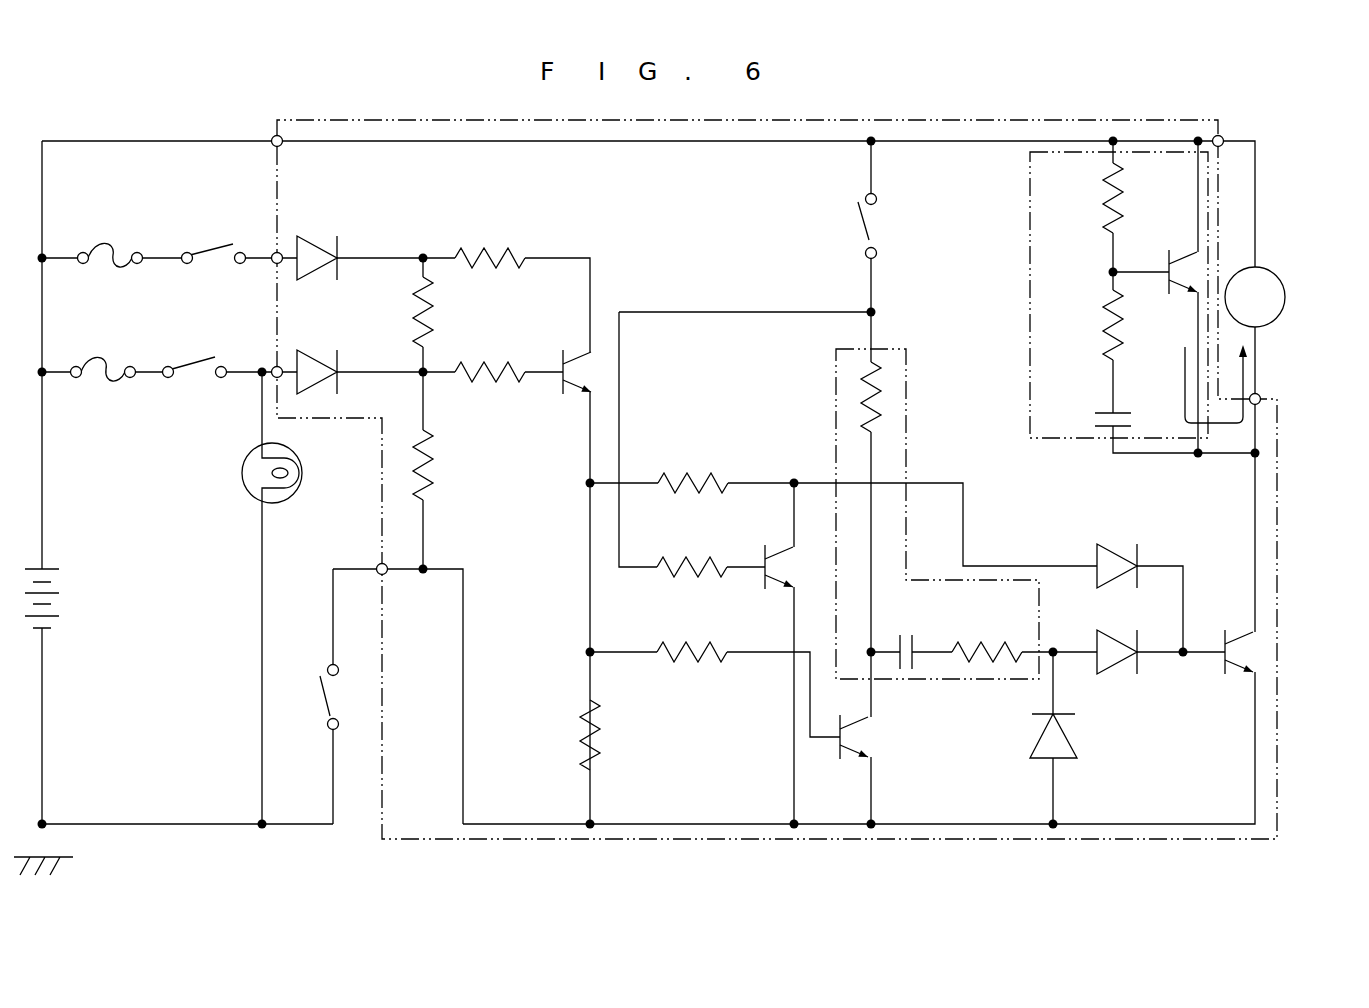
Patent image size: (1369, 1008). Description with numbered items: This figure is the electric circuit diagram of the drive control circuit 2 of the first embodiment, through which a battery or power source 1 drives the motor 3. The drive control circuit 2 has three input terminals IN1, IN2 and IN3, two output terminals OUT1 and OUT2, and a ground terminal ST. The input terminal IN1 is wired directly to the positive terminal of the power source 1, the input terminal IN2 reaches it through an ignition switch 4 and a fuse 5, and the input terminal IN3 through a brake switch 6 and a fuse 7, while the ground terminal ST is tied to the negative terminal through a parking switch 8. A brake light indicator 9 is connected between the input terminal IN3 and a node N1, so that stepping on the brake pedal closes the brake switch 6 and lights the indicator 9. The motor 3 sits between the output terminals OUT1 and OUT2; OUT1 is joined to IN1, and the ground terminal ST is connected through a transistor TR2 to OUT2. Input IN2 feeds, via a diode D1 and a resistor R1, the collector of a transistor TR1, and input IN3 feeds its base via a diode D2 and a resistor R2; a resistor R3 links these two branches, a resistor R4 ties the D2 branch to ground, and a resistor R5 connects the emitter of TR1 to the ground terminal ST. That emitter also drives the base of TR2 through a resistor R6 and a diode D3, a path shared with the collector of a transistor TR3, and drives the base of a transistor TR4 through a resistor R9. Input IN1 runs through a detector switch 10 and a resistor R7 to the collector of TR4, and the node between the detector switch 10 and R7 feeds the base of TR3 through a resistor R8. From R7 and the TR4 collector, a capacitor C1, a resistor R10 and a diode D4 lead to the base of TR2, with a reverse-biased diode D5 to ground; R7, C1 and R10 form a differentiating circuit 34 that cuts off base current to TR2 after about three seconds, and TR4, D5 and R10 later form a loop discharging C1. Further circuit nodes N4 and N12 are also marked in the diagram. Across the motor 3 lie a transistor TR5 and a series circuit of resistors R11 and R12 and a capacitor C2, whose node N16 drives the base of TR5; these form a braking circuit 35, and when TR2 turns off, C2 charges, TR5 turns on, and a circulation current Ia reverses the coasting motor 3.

The power source 1 is at (48, 571).
The drive control circuit 2 is at (388, 120).
The motor 3 is at (1278, 283).
The ignition switch 4 is at (211, 249).
The fuse 5 is at (112, 257).
The brake switch 6 is at (203, 359).
The fuse 7 is at (108, 362).
The parking switch 8 is at (325, 700).
The brake light indicator 9 is at (248, 492).
The detector switch 10 is at (858, 236).
The differentiating circuit 34 is at (906, 428).
The braking circuit 35 is at (1028, 215).
The diode D1 is at (308, 243).
The diode D2 is at (308, 357).
The diode D3 is at (1106, 556).
The diode D4 is at (1118, 663).
The diode D5 is at (1072, 734).
The resistor R1 is at (490, 244).
The resistor R2 is at (490, 358).
The resistor R3 is at (415, 316).
The resistor R4 is at (432, 471).
The resistor R5 is at (576, 735).
The resistor R6 is at (695, 476).
The resistor R7 is at (876, 432).
The resistor R8 is at (680, 561).
The resistor R9 is at (680, 643).
The resistor R10 is at (972, 641).
The resistor R11 is at (1105, 205).
The resistor R12 is at (1098, 328).
The capacitor C1 is at (913, 650).
The capacitor C2 is at (1095, 412).
The transistor TR1 is at (556, 382).
The transistor TR2 is at (1222, 658).
The transistor TR3 is at (770, 585).
The transistor TR4 is at (837, 748).
The transistor TR5 is at (1165, 292).
The input terminal IN1 is at (272, 146).
The input terminal IN2 is at (272, 264).
The input terminal IN3 is at (272, 366).
The output terminal OUT1 is at (1221, 136).
The output terminal OUT2 is at (1260, 394).
The ground terminal ST is at (376, 566).
The node N1 is at (258, 821).
The node N4 is at (423, 575).
The node N12 is at (585, 653).
The node N16 is at (1108, 272).
The circulation current Ia is at (1183, 401).